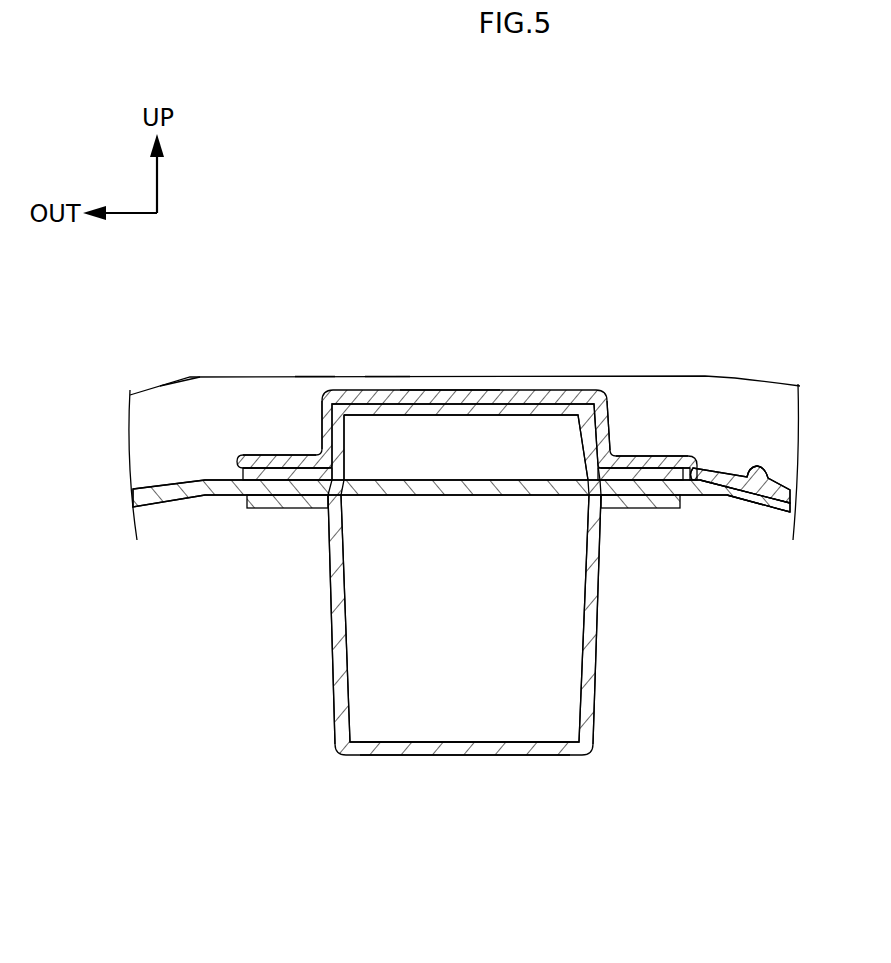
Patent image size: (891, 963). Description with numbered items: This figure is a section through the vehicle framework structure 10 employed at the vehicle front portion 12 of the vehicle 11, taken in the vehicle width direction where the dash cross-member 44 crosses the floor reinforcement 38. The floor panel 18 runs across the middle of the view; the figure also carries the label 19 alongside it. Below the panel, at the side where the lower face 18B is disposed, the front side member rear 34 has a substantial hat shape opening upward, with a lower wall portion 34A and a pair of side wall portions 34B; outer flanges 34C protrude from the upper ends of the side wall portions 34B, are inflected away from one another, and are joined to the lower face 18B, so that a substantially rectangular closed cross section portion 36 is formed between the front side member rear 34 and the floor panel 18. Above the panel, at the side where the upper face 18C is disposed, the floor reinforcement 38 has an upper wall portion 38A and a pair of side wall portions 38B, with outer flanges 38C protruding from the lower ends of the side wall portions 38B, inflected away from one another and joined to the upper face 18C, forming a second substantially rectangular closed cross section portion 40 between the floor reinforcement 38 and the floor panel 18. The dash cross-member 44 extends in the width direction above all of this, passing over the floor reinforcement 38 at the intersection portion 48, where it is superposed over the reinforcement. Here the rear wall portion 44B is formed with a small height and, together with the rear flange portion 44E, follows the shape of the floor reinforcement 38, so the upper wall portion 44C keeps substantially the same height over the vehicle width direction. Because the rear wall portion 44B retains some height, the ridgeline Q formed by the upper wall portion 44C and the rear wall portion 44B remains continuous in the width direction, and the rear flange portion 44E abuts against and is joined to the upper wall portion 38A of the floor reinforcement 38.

The vehicle framework structure 10 is at (504, 249).
The vehicle front portion 12 is at (486, 394).
The vehicle 11 is at (756, 218).
The dash cross-member 44 is at (659, 332).
The rear wall portion 44B is at (313, 390).
The upper wall portion 44C is at (387, 376).
The rear flange portion 44E is at (747, 469).
The ridgeline Q is at (180, 377).
The intersection portion 48 is at (538, 356).
The floor panel 18 is at (488, 549).
The panel 19 is at (775, 527).
The lower face 18B is at (727, 500).
The upper face 18C is at (763, 496).
The floor reinforcement 38 is at (574, 391).
The upper wall portion 38A is at (440, 412).
The side wall portions 38B is at (342, 452).
The outer flanges 38C is at (262, 465).
The closed cross section portion 40 is at (479, 465).
The front side member rear 34 is at (405, 768).
The lower wall portion 34A is at (486, 756).
The side wall portions 34B is at (333, 683).
The outer flanges 34C is at (265, 503).
The closed cross section portion 36 is at (476, 578).